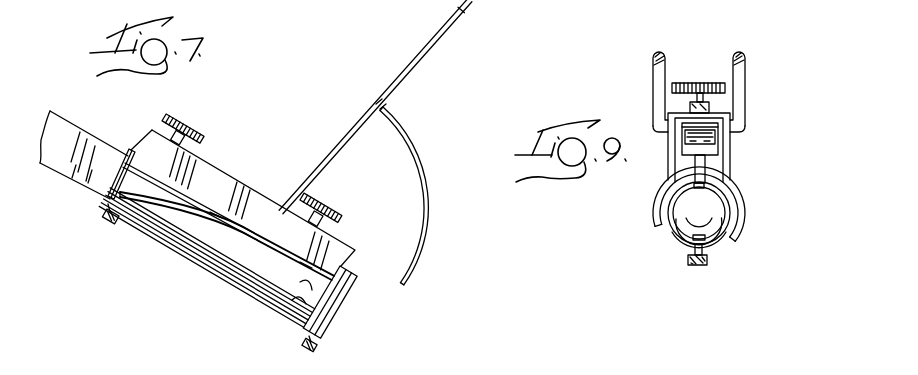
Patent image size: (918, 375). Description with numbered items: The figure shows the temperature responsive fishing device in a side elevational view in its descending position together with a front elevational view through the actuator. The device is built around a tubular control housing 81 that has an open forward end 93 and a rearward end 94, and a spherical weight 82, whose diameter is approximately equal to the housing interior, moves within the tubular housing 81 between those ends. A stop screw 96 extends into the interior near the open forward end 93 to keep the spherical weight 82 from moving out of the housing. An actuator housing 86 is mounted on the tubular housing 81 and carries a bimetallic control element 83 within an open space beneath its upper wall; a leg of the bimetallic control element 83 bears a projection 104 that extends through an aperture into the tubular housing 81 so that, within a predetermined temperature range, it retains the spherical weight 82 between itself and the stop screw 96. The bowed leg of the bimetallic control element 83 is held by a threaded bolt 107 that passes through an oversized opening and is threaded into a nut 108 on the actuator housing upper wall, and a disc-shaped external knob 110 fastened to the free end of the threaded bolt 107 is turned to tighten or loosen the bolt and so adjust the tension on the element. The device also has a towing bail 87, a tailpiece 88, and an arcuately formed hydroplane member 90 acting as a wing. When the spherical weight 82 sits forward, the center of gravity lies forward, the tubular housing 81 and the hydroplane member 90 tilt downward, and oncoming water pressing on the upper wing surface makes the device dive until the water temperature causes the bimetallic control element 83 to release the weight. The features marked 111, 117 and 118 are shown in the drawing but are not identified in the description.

In FIG. 7, the tubular control housing 81 is at (222, 276).
In FIG. 9, the tubular control housing 81 is at (718, 245).
In FIG. 7, the spherical weight 82 is at (262, 300).
In FIG. 9, the spherical weight 82 is at (720, 204).
In FIG. 9, the bimetallic control element 83 is at (712, 133).
In FIG. 7, the actuator housing 86 is at (172, 224).
In FIG. 9, the actuator housing 86 is at (658, 228).
In FIG. 7, the towing bail 87 is at (418, 64).
In FIG. 9, the towing bail 87 is at (740, 65).
In FIG. 7, the tailpiece 88 is at (57, 163).
In FIG. 7, the hydroplane member 90 is at (226, 228).
In FIG. 7, the open forward end 93 is at (333, 322).
In FIG. 7, the rearward end 94 is at (87, 192).
In FIG. 9, the stop screw 96 is at (706, 266).
In FIG. 9, the projection 104 is at (695, 162).
In FIG. 9, the threaded bolt 107 is at (695, 101).
In FIG. 9, the nut 108 is at (712, 108).
In FIG. 7, the external knob 110 is at (201, 122).
In FIG. 9, the external knob 110 is at (712, 82).
In FIG. 9, the insert 111 is at (708, 145).
In FIG. 7, the arm end 117 is at (465, 12).
In FIG. 7, the curved guide 118 is at (430, 208).